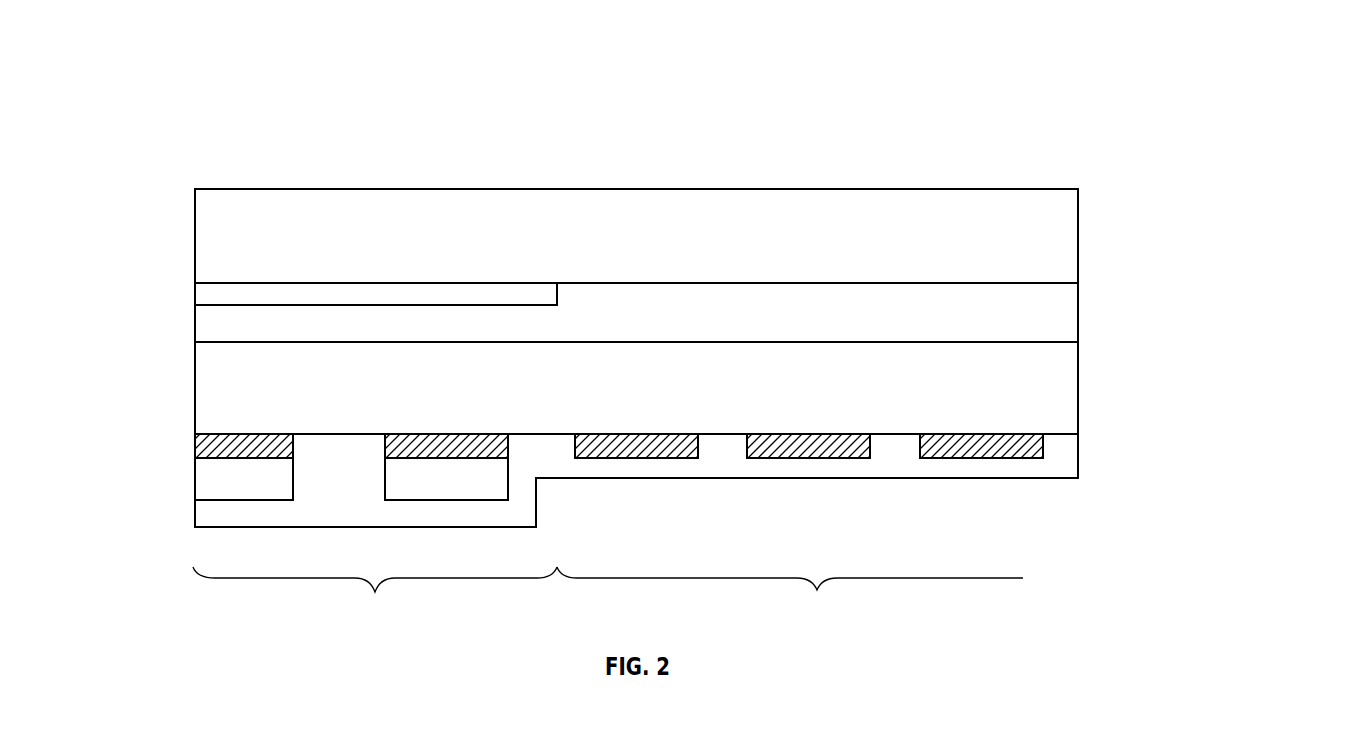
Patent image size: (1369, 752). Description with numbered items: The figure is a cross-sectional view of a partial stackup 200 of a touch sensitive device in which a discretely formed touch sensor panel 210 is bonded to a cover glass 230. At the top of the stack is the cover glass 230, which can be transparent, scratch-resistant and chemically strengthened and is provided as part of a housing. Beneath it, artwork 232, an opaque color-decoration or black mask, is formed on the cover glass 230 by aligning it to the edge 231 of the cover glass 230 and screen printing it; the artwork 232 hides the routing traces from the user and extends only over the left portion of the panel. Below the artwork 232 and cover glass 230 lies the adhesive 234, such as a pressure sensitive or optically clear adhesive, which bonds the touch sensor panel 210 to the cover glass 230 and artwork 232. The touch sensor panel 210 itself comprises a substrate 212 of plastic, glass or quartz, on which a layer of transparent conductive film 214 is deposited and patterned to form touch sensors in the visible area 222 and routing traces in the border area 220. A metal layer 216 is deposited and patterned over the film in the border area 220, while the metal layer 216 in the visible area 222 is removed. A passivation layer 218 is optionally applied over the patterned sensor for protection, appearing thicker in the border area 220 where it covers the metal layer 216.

The partial stackup 200 is at (342, 124).
The touch sensor panel 210 is at (1140, 340).
The substrate 212 is at (1063, 396).
The transparent conductive film 214 is at (200, 447).
The metal layer 216 is at (198, 477).
The passivation layer 218 is at (1062, 462).
The border area 220 is at (375, 607).
The visible area 222 is at (790, 607).
The cover glass 230 is at (802, 203).
The edge of the cover glass 231 is at (195, 237).
The artwork 232 is at (210, 297).
The adhesive 234 is at (1063, 312).